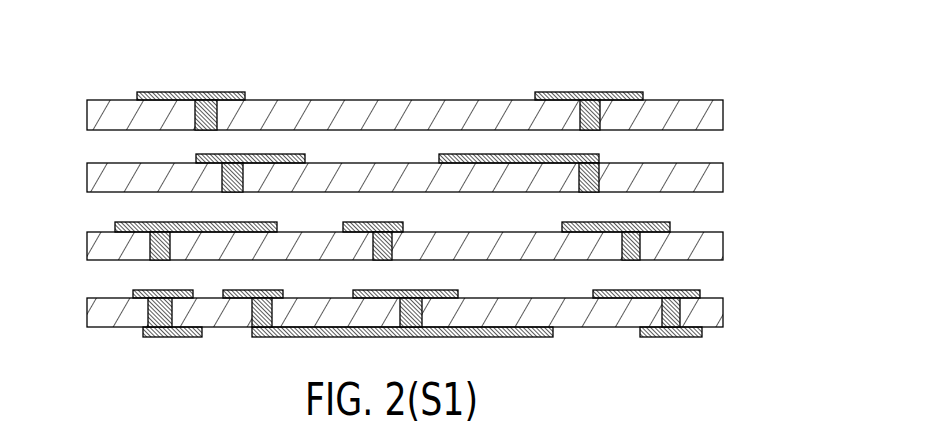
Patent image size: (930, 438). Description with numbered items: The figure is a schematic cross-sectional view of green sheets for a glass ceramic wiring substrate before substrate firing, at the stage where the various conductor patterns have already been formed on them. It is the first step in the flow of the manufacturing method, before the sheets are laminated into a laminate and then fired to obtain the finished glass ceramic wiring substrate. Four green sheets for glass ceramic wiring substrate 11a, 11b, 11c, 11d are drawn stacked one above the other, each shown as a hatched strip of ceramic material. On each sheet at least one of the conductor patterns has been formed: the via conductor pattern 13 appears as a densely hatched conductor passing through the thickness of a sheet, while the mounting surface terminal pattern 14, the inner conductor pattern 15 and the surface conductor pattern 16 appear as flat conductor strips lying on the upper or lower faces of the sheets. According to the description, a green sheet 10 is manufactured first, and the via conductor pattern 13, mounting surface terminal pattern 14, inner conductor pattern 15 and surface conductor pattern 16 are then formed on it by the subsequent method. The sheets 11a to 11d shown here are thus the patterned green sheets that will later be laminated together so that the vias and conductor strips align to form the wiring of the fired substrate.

The green sheet 10 is at (583, 327).
The green sheet for glass ceramic wiring substrate 11a is at (457, 73).
The green sheet for glass ceramic wiring substrate 11b is at (457, 114).
The green sheet for glass ceramic wiring substrate 11c is at (425, 243).
The green sheet for glass ceramic wiring substrate 11d is at (457, 353).
The via conductor pattern 13 is at (150, 239).
The mounting surface terminal pattern 14 is at (186, 337).
The inner conductor pattern 15 is at (480, 154).
The surface conductor pattern 16 is at (622, 92).